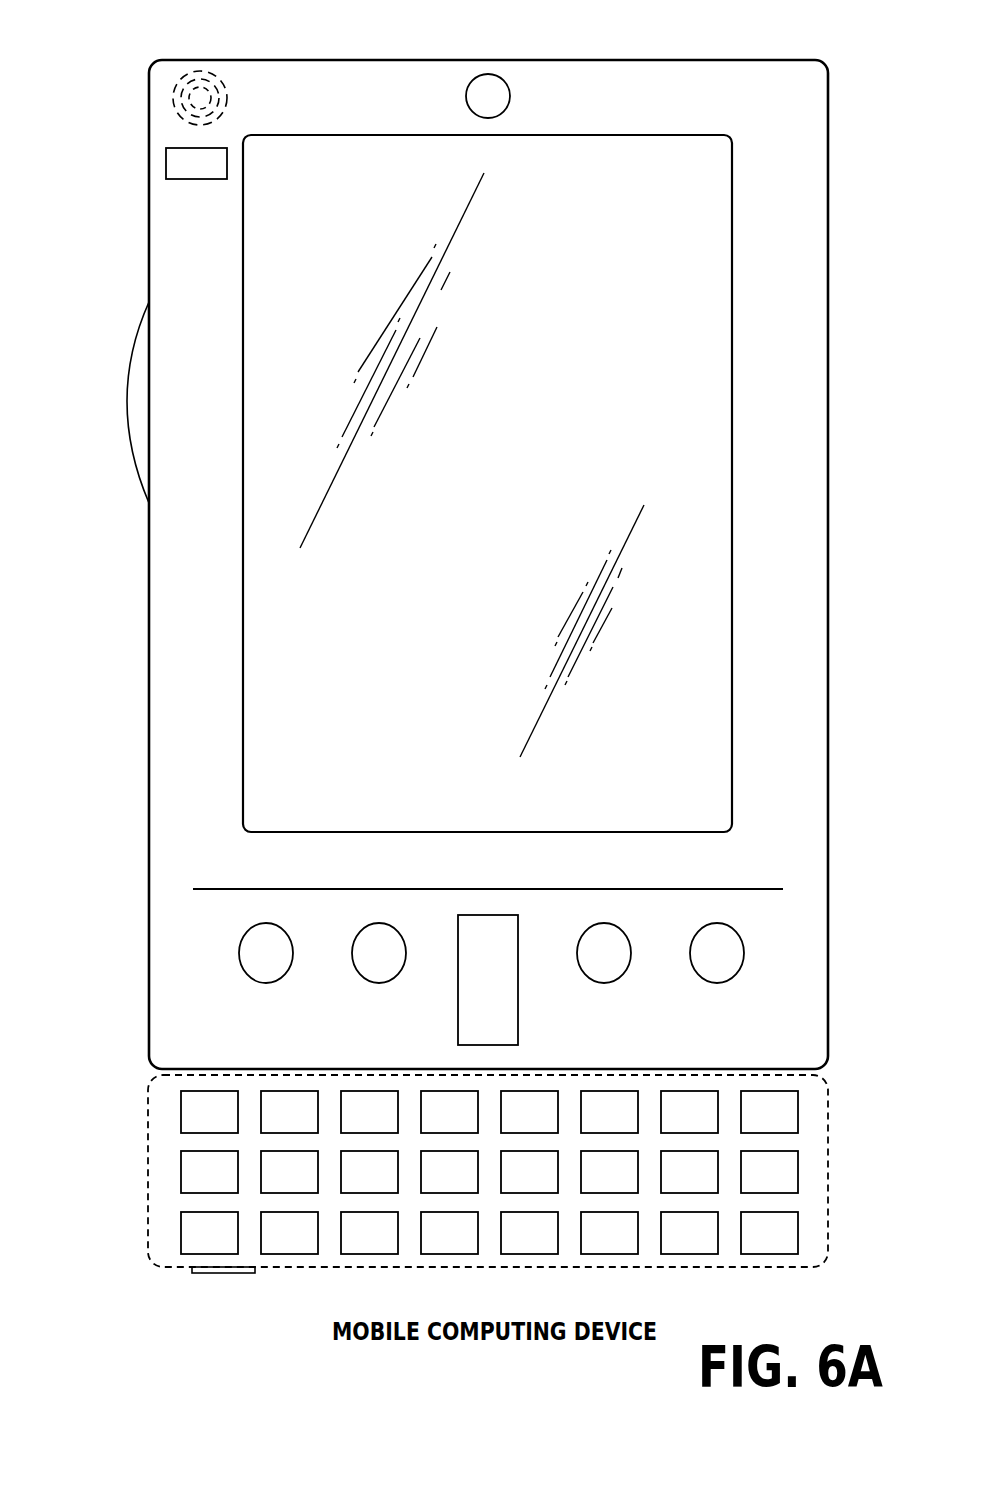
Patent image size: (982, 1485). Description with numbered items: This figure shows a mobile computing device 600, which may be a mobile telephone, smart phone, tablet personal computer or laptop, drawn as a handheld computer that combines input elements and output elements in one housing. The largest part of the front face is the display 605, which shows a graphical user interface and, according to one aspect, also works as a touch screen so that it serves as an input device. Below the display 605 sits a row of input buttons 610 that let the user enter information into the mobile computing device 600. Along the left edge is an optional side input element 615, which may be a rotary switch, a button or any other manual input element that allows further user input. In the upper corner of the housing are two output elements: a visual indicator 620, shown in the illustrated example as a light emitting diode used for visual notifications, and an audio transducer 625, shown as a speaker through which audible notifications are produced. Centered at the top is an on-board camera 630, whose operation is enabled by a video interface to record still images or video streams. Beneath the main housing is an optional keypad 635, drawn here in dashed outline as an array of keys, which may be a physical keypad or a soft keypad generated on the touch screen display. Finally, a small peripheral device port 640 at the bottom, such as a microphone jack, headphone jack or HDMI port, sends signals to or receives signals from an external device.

The mobile computing device 600 is at (792, 59).
The display 605 is at (268, 663).
The input buttons 610 is at (266, 983).
The side input element 615 is at (128, 402).
The visual indicator 620 is at (166, 163).
The audio transducer 625 is at (168, 100).
The on-board camera 630 is at (490, 75).
The keypad 635 is at (160, 1170).
The peripheral device port 640 is at (201, 1275).